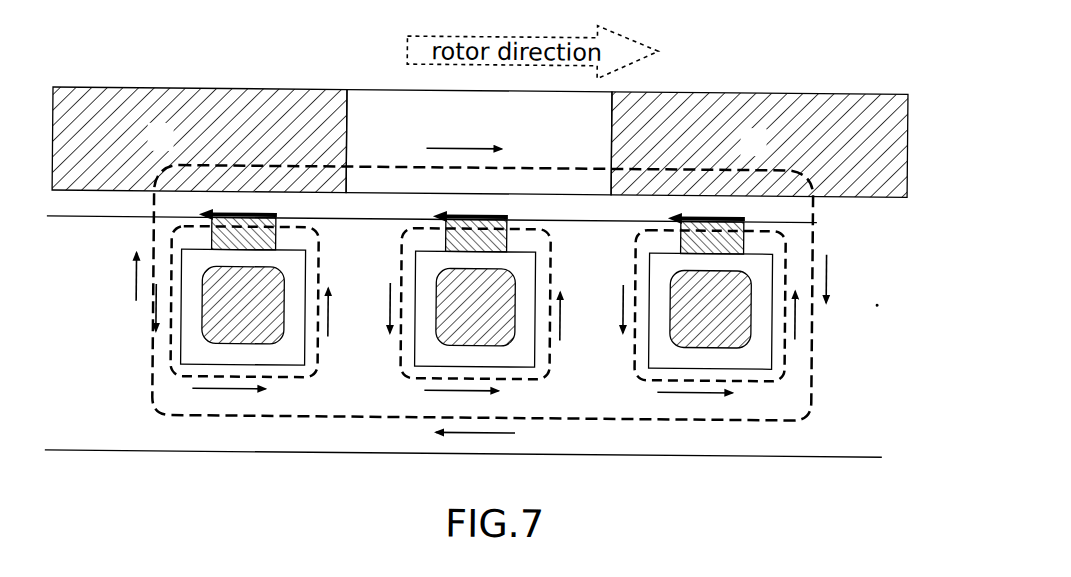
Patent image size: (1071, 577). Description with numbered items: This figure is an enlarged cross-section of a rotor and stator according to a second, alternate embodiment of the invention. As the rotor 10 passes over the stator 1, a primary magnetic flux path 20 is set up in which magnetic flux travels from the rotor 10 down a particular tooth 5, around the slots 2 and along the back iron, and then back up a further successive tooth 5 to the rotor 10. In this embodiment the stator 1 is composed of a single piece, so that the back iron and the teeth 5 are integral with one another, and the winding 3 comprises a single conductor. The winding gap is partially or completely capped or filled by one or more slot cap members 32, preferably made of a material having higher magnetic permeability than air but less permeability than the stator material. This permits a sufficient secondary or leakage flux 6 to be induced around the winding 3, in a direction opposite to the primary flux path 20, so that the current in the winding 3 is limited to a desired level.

The rotor 10 is at (724, 58).
The stator 1 is at (906, 380).
The slot cap member 32 is at (452, 233).
The slot 2 is at (650, 348).
The winding 3 is at (262, 323).
The leakage flux 6 is at (650, 228).
The tooth 5 is at (602, 291).
The primary magnetic flux path 20 is at (722, 414).